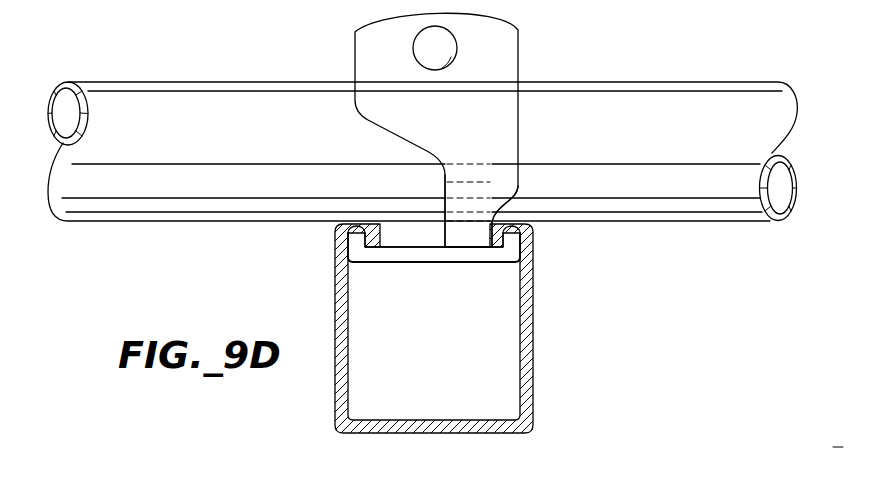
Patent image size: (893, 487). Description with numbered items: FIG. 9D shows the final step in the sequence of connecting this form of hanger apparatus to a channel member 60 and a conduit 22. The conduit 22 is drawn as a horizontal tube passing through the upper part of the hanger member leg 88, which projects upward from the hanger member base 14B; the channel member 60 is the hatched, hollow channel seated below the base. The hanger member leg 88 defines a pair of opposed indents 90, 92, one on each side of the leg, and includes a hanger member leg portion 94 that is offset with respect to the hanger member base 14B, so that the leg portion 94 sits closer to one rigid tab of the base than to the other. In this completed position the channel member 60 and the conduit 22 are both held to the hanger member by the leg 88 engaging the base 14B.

The conduit 22 is at (589, 98).
The hanger member leg 88 is at (400, 107).
The indent 90 is at (445, 190).
The indent 92 is at (497, 216).
The hanger member base 14B is at (437, 265).
The hanger member leg portion 94 is at (470, 248).
The channel member 60 is at (527, 352).